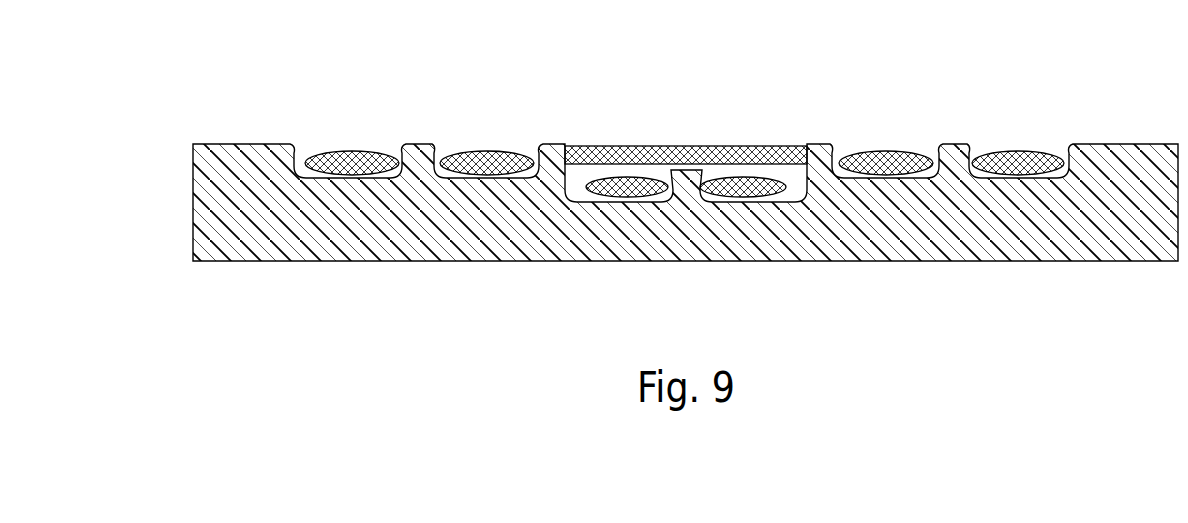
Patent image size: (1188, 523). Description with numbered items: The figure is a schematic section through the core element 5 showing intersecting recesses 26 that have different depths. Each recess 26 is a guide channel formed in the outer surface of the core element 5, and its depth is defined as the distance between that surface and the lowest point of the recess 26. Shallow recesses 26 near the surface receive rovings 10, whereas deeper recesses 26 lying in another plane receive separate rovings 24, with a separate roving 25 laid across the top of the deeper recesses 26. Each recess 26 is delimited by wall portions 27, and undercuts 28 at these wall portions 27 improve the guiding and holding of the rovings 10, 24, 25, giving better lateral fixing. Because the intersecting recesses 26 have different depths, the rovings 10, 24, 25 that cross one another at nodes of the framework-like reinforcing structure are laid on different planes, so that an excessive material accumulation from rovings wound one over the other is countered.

The core element 5 is at (222, 168).
The roving 10 is at (357, 151).
The separate roving 24 is at (628, 188).
The separate roving 25 is at (723, 147).
The recess 26 is at (321, 130).
The wall portion 27 is at (302, 168).
The undercut 28 is at (397, 146).